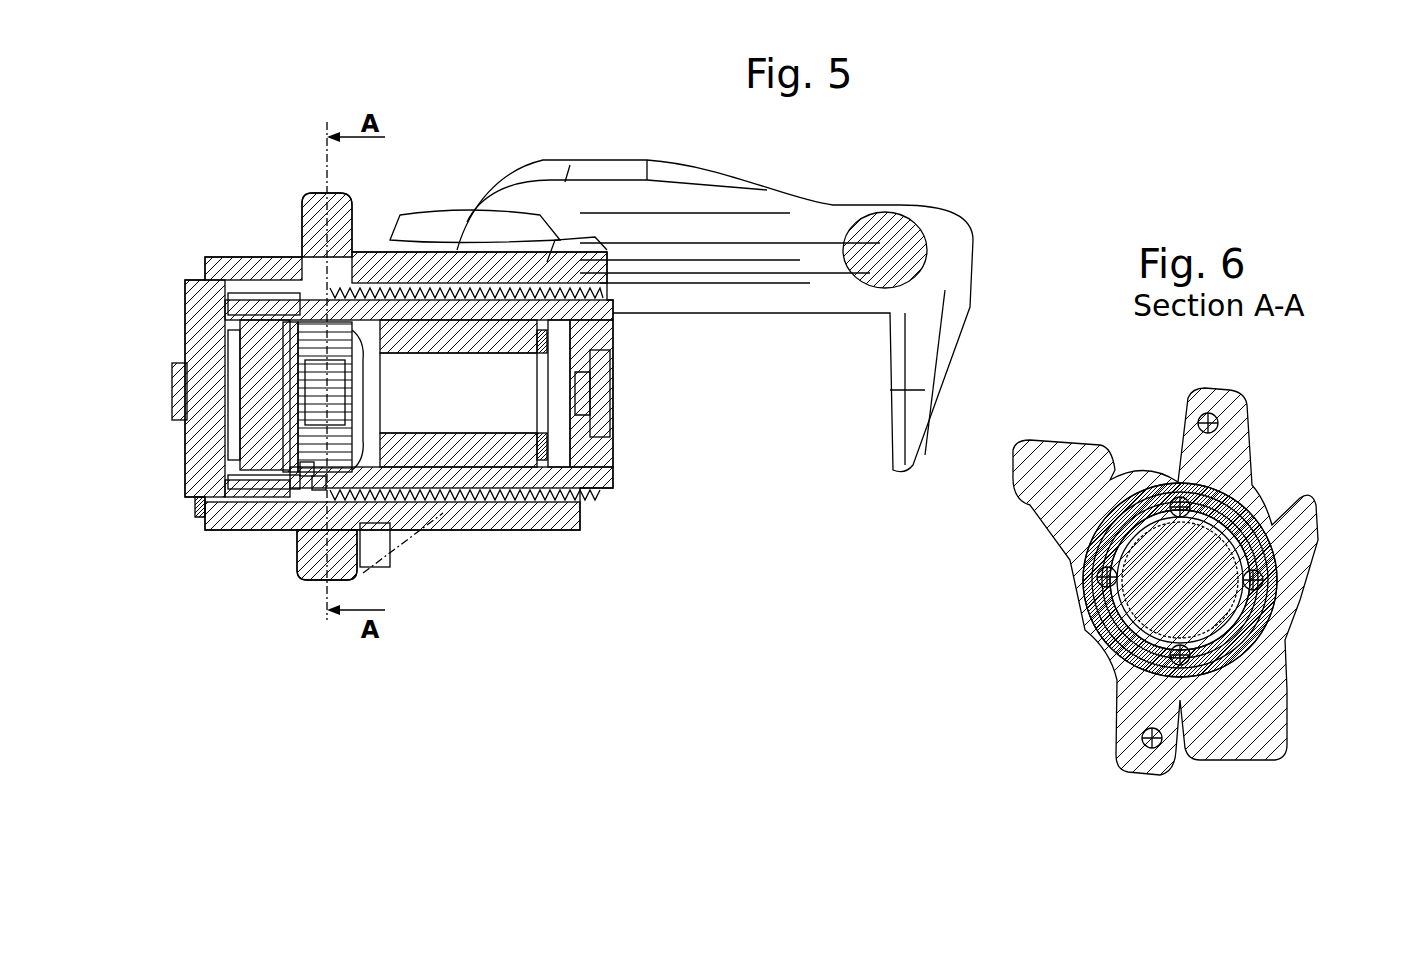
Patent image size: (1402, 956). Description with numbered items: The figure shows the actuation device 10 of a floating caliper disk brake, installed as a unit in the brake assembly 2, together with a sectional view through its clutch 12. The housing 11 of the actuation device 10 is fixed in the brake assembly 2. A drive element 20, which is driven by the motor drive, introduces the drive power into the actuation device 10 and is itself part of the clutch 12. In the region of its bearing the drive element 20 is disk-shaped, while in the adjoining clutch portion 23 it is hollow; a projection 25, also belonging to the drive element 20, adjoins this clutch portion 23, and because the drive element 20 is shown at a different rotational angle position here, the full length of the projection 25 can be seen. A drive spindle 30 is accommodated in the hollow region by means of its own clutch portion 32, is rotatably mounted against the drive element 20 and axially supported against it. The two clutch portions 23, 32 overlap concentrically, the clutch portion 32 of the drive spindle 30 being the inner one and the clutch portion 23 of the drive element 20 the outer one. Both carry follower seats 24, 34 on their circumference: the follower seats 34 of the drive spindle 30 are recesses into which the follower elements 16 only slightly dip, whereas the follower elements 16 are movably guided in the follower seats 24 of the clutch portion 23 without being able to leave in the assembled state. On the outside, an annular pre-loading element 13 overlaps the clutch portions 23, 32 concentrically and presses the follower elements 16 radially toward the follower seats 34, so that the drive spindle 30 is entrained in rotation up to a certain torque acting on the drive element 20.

In FIG. 5, the brake assembly 2 is at (575, 197).
In FIG. 6, the brake assembly 2 is at (1235, 720).
In FIG. 5, the actuation device 10 is at (465, 578).
In FIG. 6, the housing 11 is at (1170, 680).
In FIG. 5, the clutch 12 is at (312, 260).
In FIG. 6, the clutch 12 is at (1231, 458).
In FIG. 5, the pre-loading element 13 is at (318, 483).
In FIG. 6, the pre-loading element 13 is at (1106, 628).
In FIG. 5, the follower elements 16 is at (323, 315).
In FIG. 6, the follower elements 16 is at (1105, 583).
In FIG. 5, the drive element 20 is at (227, 387).
In FIG. 6, the drive element 20 is at (1259, 645).
In FIG. 5, the clutch portion 23 is at (310, 470).
In FIG. 6, the follower seats 24 is at (1102, 568).
In FIG. 5, the projection 25 is at (427, 310).
In FIG. 6, the drive spindle 30 is at (1258, 553).
In FIG. 5, the clutch portion 32 is at (330, 392).
In FIG. 6, the clutch portion 32 is at (1175, 553).
In FIG. 6, the follower seats 34 is at (1138, 625).